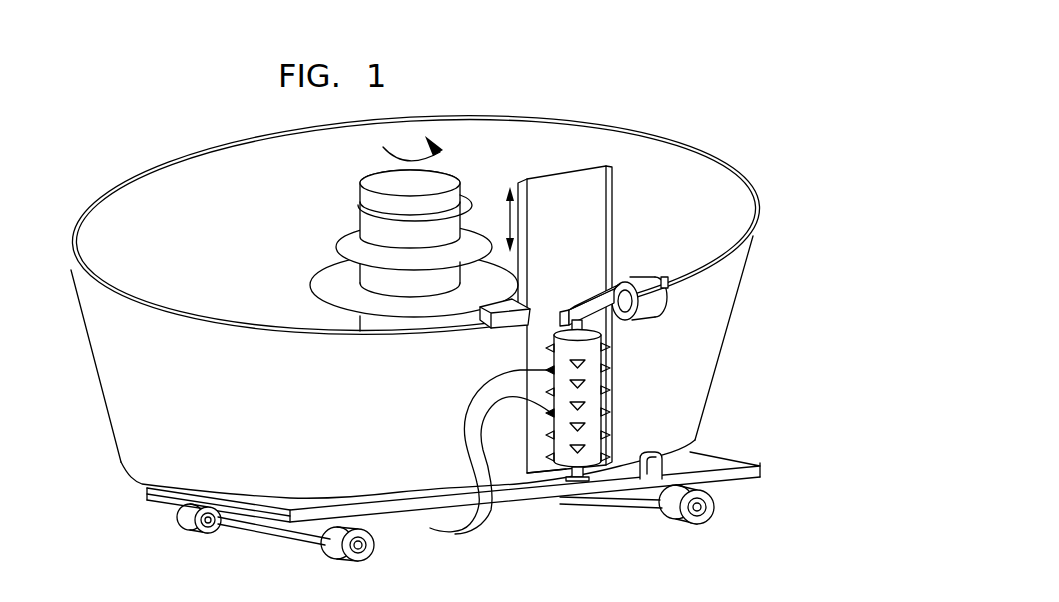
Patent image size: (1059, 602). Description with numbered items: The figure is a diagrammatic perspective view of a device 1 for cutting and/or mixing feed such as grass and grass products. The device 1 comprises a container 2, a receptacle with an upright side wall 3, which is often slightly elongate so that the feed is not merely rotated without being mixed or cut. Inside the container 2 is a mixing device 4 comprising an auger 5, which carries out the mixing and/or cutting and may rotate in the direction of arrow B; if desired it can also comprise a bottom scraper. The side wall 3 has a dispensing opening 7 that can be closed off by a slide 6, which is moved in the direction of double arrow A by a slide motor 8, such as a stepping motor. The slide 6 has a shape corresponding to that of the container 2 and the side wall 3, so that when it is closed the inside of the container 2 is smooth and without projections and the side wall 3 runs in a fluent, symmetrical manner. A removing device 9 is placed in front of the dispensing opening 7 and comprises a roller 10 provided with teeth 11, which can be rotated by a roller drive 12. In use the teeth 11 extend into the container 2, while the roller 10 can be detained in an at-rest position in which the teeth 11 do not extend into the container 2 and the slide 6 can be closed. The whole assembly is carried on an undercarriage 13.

The device 1 is at (431, 312).
The container 2 is at (155, 168).
The side wall 3 is at (226, 410).
The mixing device 4 is at (368, 198).
The auger 5 is at (353, 243).
The slide 6 is at (582, 241).
The dispensing opening 7 is at (537, 461).
The slide motor 8 is at (508, 320).
The removing device 9 is at (608, 503).
The roller 10 is at (591, 384).
The teeth 11 is at (477, 459).
The roller drive 12 is at (657, 300).
The undercarriage 13 is at (267, 527).